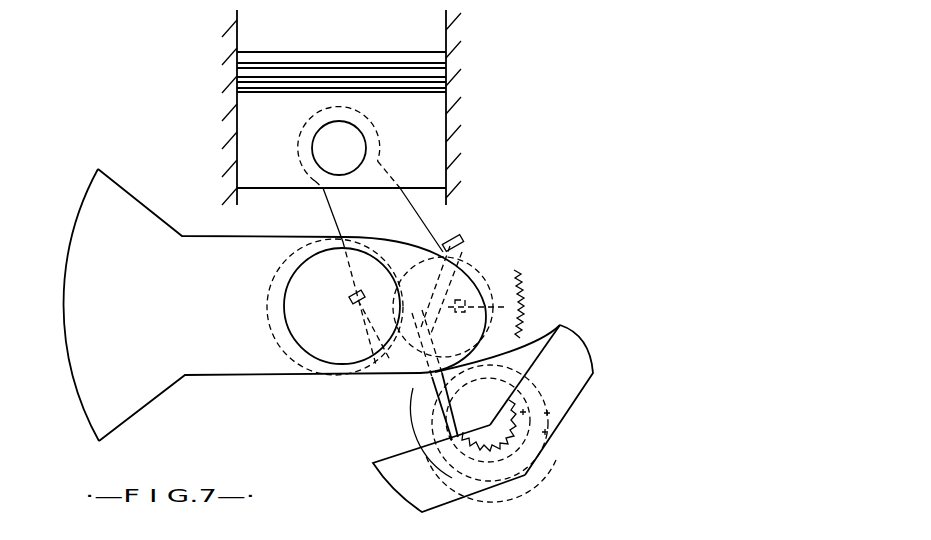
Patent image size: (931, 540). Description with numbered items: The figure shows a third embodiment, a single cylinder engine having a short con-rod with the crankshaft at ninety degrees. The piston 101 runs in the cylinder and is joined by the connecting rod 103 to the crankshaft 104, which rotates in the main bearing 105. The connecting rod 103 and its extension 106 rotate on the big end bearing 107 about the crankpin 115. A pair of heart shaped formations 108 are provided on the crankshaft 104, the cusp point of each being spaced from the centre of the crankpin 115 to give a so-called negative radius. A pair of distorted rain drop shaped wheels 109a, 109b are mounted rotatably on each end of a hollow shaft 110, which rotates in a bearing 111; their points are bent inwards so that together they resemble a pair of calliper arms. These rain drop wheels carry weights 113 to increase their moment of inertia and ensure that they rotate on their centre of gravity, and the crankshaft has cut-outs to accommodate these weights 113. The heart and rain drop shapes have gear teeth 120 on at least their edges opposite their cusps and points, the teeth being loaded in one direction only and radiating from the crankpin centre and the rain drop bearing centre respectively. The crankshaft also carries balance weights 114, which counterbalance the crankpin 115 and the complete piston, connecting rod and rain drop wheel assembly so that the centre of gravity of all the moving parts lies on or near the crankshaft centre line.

The piston 101 is at (422, 124).
The connecting rod 103 is at (410, 233).
The crankshaft 104 is at (330, 347).
The main bearing 105 is at (283, 366).
The extension 106 is at (427, 410).
The big end bearing 107 is at (480, 270).
The heart shaped formations 108 is at (505, 300).
The distorted rain drop shaped wheel 109a is at (432, 378).
The distorted rain drop shaped wheel 109b is at (560, 326).
The hollow shaft 110 is at (547, 430).
The bearing 111 is at (527, 460).
The balance weights 113 is at (463, 485).
The balance weights 114 is at (103, 376).
The crankpin 115 is at (473, 250).
The gear teeth 120 is at (558, 417).